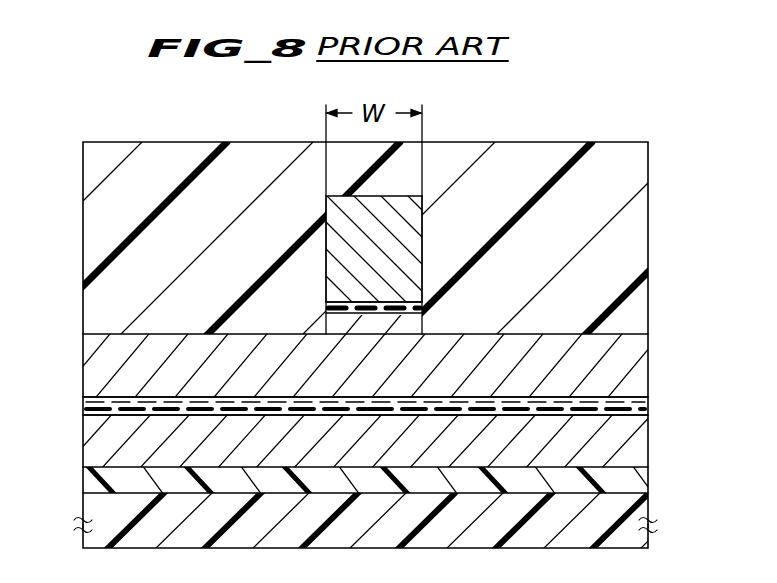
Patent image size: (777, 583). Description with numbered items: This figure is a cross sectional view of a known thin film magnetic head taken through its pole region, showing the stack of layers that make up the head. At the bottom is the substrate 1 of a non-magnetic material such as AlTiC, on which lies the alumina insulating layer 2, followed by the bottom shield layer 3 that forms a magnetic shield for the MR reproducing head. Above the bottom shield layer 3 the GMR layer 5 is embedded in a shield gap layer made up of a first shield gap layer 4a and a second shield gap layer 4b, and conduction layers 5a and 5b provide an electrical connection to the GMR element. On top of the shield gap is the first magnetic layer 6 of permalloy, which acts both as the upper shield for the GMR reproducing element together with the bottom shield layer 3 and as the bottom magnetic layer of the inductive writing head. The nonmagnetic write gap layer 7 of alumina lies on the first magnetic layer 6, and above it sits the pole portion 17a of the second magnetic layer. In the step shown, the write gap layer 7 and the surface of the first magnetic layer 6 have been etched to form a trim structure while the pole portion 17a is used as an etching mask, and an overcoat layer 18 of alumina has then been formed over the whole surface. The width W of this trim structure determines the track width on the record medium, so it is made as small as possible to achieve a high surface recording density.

The substrate 1 is at (628, 538).
The insulating layer 2 is at (647, 483).
The bottom shield layer 3 is at (636, 452).
The first shield gap layer 4a is at (107, 417).
The second shield gap layer 4b is at (120, 397).
The GMR layer 5 is at (372, 407).
The conduction layer 5a is at (107, 413).
The conduction layer 5b is at (648, 407).
The first magnetic layer 6 is at (636, 368).
The write gap layer 7 is at (357, 300).
The pole portion of the second magnetic layer 17a is at (410, 219).
The overcoat layer 18 is at (617, 157).